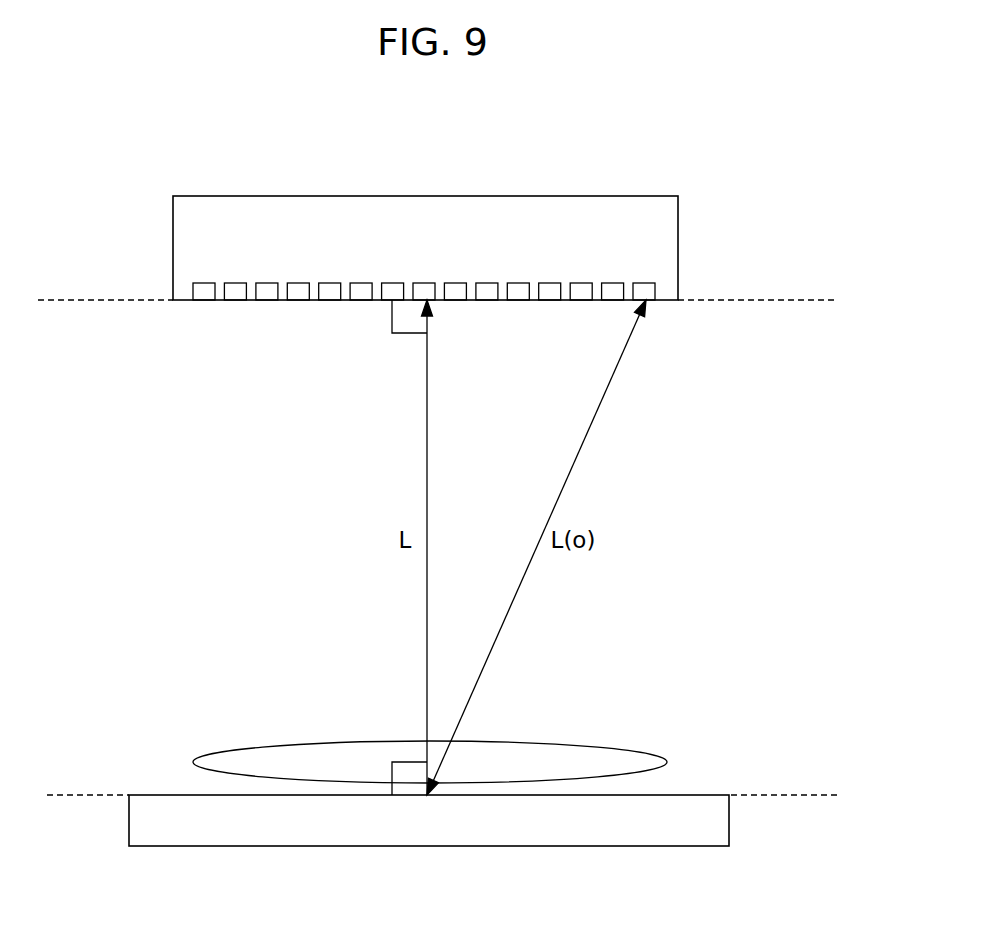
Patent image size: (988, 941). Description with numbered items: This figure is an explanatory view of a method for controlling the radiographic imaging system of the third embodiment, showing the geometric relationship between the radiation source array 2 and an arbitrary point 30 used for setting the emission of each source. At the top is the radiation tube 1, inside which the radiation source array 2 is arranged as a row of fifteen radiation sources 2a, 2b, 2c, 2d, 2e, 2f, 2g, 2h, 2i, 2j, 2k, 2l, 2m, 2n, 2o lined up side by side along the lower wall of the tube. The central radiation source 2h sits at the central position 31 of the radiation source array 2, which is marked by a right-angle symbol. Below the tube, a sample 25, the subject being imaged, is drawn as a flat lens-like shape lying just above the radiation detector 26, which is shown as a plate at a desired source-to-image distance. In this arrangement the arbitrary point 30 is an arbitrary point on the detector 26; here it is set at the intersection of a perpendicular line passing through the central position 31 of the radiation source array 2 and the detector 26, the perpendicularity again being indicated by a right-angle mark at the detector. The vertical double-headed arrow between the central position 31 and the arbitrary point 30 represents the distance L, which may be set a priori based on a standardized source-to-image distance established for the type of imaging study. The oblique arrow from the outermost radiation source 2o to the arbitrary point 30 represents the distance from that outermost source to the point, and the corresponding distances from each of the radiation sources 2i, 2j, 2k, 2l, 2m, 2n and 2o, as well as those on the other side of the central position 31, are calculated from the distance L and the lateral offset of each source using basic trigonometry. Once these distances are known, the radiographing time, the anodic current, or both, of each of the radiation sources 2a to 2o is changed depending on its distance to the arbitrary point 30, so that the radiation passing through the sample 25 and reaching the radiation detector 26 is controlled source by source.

The radiation tube 1 is at (637, 195).
The radiation source array 2 is at (187, 242).
The radiation source 2a is at (204, 278).
The radiation source 2b is at (235, 278).
The radiation source 2c is at (267, 278).
The radiation source 2d is at (298, 278).
The radiation source 2e is at (330, 278).
The radiation source 2f is at (361, 278).
The radiation source 2g is at (393, 278).
The central radiation source 2h is at (424, 278).
The radiation source 2i is at (455, 278).
The radiation source 2j is at (487, 278).
The radiation source 2k is at (518, 278).
The radiation source 2l is at (550, 278).
The radiation source 2m is at (581, 278).
The radiation source 2n is at (613, 278).
The radiation source 2o is at (644, 278).
The sample 25 is at (594, 757).
The radiation detector 26 is at (636, 836).
The arbitrary point 30 is at (427, 797).
The central position 31 is at (427, 302).